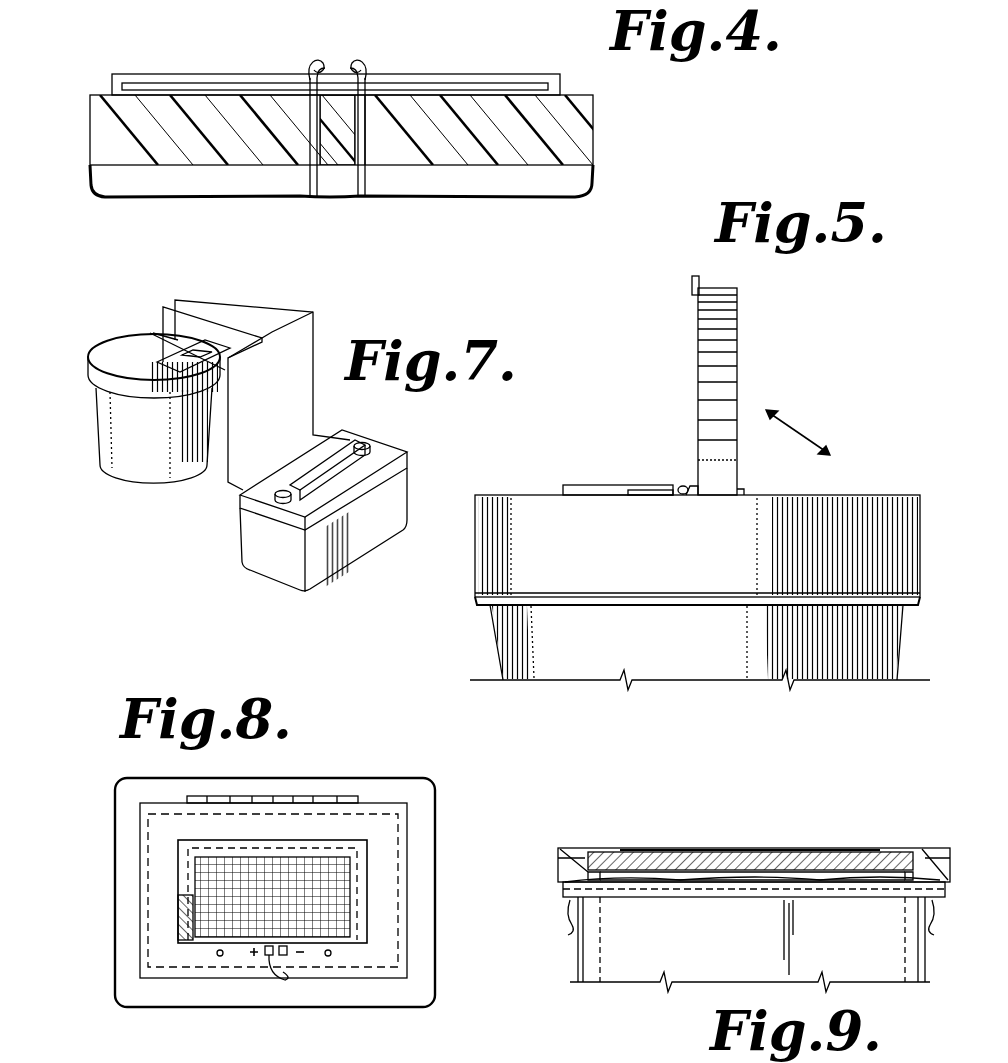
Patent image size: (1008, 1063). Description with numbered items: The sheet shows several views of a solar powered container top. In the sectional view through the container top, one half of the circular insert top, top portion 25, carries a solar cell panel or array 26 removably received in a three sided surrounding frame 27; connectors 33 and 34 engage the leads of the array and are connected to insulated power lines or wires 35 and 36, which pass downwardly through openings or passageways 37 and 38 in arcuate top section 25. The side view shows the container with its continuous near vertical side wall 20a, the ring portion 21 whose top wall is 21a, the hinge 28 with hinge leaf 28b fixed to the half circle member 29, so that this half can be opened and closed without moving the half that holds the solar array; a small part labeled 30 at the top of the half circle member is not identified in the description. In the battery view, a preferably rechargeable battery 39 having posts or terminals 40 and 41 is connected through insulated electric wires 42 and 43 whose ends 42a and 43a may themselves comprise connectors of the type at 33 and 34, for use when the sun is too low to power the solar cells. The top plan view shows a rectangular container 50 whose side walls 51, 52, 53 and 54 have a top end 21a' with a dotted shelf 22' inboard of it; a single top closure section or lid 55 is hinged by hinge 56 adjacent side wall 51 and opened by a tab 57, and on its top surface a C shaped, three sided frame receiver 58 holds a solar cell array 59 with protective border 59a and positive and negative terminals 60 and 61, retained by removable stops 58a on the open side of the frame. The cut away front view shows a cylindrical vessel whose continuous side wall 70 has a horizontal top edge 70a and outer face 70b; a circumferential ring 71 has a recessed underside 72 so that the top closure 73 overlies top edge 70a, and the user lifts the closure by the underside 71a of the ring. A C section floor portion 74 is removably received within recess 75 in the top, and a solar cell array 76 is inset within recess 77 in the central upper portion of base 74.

In FIG. 5, the side wall 20a is at (510, 650).
In FIG. 5, the ring portion 21 is at (676, 587).
In FIG. 5, the top wall 21a is at (697, 528).
In FIG. 8, the top end of side walls 21a' is at (304, 891).
In FIG. 8, the shelf 22' is at (311, 890).
In FIG. 4, the top portion 25 is at (594, 128).
In FIG. 4, the solar cell panel or array 26 is at (264, 90).
In FIG. 4, the three sided surrounding frame 27 is at (216, 77).
In FIG. 5, the three sided surrounding frame 27 is at (572, 486).
In FIG. 5, the hinge 28 is at (694, 490).
In FIG. 5, the hinge leaf 28b is at (738, 492).
In FIG. 5, the half circle member 29 is at (726, 356).
In FIG. 5, the clip 30 is at (700, 276).
In FIG. 4, the connector 33 is at (320, 75).
In FIG. 5, the connector 33 is at (678, 488).
In FIG. 4, the connector 34 is at (356, 62).
In FIG. 4, the insulated power line or wire 35 is at (310, 145).
In FIG. 4, the insulated power line or wire 36 is at (366, 140).
In FIG. 4, the opening or passageway 37 is at (318, 114).
In FIG. 4, the opening or passageway 38 is at (356, 116).
In FIG. 7, the battery 39 is at (250, 547).
In FIG. 7, the post or terminal 40 is at (282, 491).
In FIG. 7, the post or terminal 41 is at (365, 443).
In FIG. 7, the insulated electric wire or line 42 is at (229, 420).
In FIG. 7, the wire end 42a is at (166, 362).
In FIG. 7, the insulated electric wire or line 43 is at (314, 415).
In FIG. 7, the wire end 43a is at (218, 365).
In FIG. 8, the container 50 is at (354, 770).
In FIG. 8, the side wall 51 is at (180, 778).
In FIG. 8, the side wall 52 is at (116, 898).
In FIG. 8, the side wall 53 is at (240, 1007).
In FIG. 8, the side wall 54 is at (436, 942).
In FIG. 8, the top closure section or lid 55 is at (383, 803).
In FIG. 8, the hinge 56 is at (258, 796).
In FIG. 8, the tab 57 is at (283, 980).
In FIG. 8, the frame receiver 58 is at (280, 845).
In FIG. 8, the stops 58a is at (218, 956).
In FIG. 8, the solar cell array 59 is at (330, 870).
In FIG. 8, the protective border 59a is at (200, 942).
In FIG. 8, the positive terminal 60 is at (269, 956).
In FIG. 8, the negative terminal 61 is at (283, 955).
In FIG. 9, the side wall 70 is at (600, 958).
In FIG. 9, the top edge 70a is at (742, 905).
In FIG. 9, the outer face 70b is at (578, 965).
In FIG. 9, the ring 71 is at (558, 864).
In FIG. 9, the underside 71a is at (570, 930).
In FIG. 9, the recessed underside 72 is at (560, 897).
In FIG. 9, the top closure 73 is at (600, 870).
In FIG. 9, the floor portion 74 is at (700, 852).
In FIG. 9, the recess 75 is at (596, 850).
In FIG. 9, the solar cell array 76 is at (772, 852).
In FIG. 9, the recess 77 is at (635, 850).